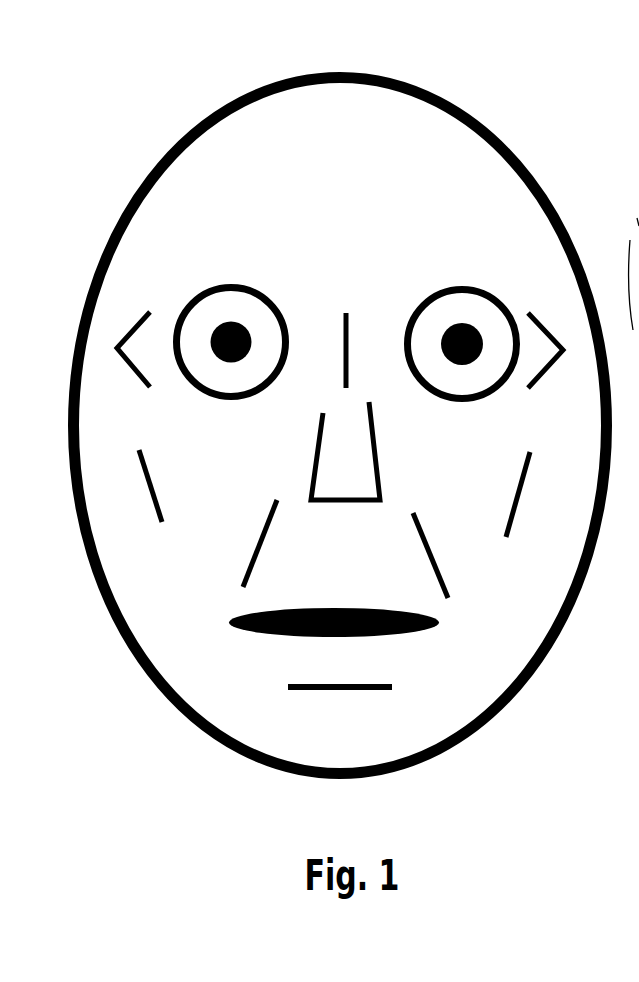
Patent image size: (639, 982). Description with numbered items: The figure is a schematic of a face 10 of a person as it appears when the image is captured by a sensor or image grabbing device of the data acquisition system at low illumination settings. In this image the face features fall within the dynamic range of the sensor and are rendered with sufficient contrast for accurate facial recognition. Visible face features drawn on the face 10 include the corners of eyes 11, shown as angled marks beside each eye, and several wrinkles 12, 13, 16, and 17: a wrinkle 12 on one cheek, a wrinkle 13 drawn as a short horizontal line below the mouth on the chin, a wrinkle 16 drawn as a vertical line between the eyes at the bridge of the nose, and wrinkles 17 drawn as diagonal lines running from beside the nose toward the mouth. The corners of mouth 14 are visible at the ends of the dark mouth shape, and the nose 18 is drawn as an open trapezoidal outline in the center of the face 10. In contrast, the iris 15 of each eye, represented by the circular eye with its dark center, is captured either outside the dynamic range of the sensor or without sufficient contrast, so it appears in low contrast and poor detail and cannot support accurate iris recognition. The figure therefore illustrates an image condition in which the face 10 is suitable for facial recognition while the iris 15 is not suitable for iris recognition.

The face 10 is at (447, 750).
The corners of eyes 11 is at (118, 348).
The wrinkle 12 is at (145, 473).
The wrinkle 13 is at (390, 688).
The corners of mouth 14 is at (232, 627).
The iris 15 is at (232, 300).
The wrinkle 16 is at (348, 360).
The wrinkle 17 is at (255, 547).
The nose 18 is at (380, 497).